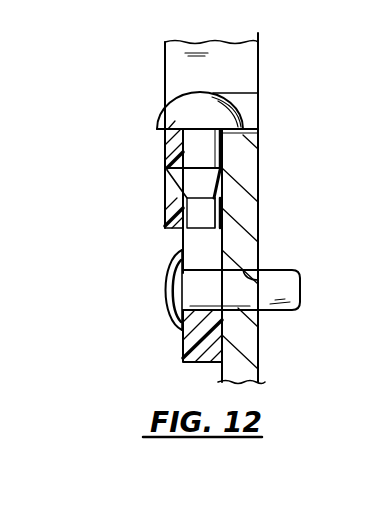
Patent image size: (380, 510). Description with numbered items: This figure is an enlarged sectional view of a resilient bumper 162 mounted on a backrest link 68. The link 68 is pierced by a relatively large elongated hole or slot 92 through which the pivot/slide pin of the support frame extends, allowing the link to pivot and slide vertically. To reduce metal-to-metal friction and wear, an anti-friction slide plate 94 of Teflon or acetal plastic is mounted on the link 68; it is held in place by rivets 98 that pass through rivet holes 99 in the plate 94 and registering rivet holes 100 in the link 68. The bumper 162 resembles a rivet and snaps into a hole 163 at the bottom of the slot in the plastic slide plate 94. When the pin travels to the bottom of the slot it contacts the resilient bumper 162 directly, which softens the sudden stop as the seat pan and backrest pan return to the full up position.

The backrest link 68 is at (259, 167).
The elongated hole or slot 92 is at (250, 135).
The anti-friction slide plate 94 is at (166, 211).
The rivets 98 is at (173, 302).
The rivet holes in plate 99 is at (250, 326).
The rivet holes in link 100 is at (263, 281).
The resilient bumper 162 is at (166, 106).
The hole 163 is at (167, 172).